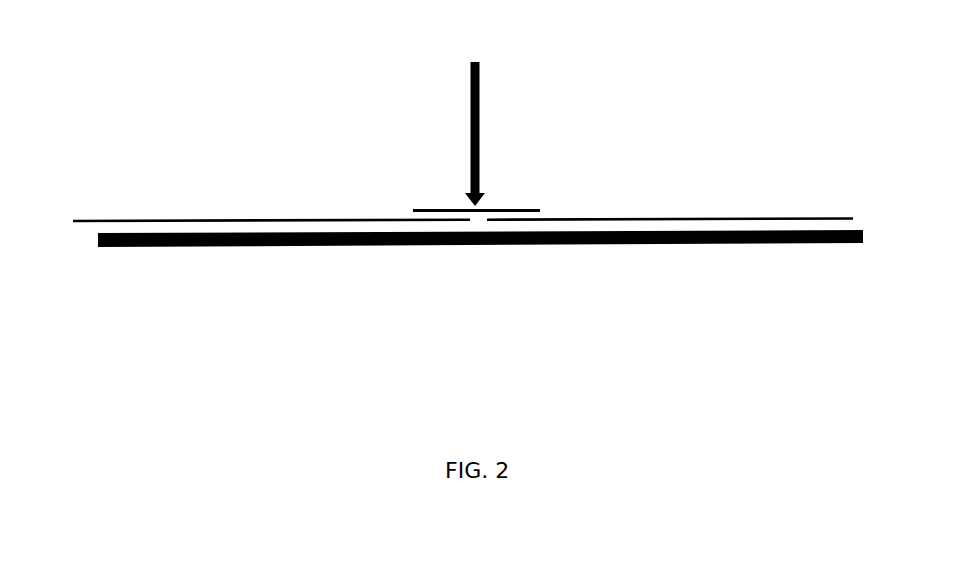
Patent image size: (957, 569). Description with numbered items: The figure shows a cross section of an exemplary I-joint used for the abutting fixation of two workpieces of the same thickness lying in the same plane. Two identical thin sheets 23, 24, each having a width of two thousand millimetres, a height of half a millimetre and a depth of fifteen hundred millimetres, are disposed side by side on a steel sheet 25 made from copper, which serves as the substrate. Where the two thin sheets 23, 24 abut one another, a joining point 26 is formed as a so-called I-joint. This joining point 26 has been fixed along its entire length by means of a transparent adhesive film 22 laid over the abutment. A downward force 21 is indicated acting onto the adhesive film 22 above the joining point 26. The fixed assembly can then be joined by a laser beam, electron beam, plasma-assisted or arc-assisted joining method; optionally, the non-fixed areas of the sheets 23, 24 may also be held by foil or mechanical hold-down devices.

The pressing force / load arrow 21 is at (468, 100).
The transparent adhesive film 22 is at (422, 207).
The thin sheet 23 is at (795, 217).
The thin sheet 24 is at (111, 219).
The steel sheet 25 is at (115, 248).
The joining point 26 is at (478, 218).